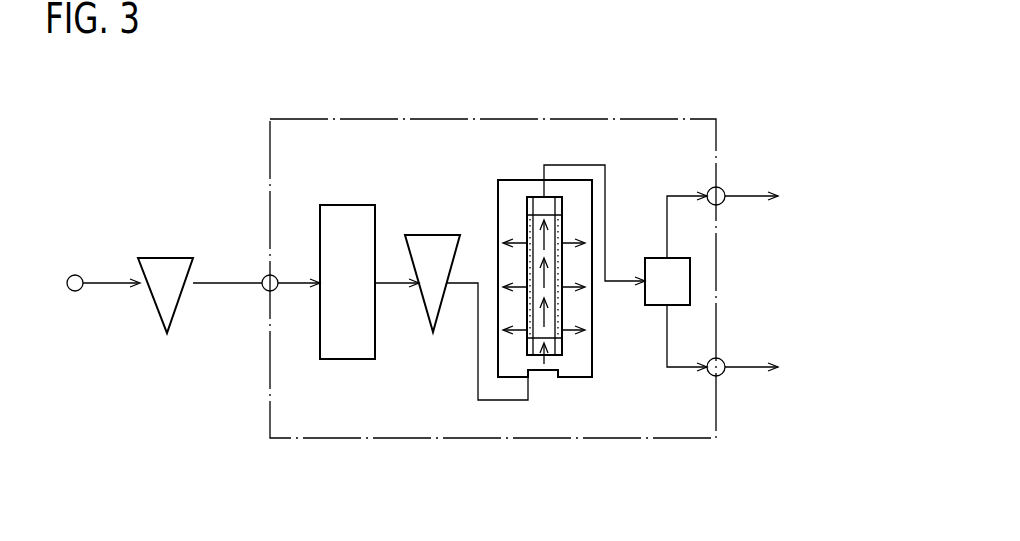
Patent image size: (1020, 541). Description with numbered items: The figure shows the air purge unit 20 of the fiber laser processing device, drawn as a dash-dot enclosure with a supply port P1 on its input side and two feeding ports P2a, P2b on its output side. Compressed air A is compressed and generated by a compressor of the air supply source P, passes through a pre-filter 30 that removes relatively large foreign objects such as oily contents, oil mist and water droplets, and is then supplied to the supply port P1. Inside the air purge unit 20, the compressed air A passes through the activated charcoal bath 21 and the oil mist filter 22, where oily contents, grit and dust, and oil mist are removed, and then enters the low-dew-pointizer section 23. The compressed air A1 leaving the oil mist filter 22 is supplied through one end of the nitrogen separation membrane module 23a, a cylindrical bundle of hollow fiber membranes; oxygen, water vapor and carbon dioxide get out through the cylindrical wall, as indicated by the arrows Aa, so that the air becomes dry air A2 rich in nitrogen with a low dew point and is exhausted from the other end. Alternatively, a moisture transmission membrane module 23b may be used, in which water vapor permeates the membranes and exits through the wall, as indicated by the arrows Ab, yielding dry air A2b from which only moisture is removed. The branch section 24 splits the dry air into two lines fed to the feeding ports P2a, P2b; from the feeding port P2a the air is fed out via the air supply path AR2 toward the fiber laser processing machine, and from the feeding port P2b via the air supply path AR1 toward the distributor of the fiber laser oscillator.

The air purge unit 20 is at (392, 119).
The activated charcoal bath 21 is at (341, 360).
The oil mist filter 22 is at (427, 308).
The low-dew-pointizer section 23 is at (596, 369).
The nitrogen separation membrane module 23a is at (524, 220).
The moisture transmission membrane module 23b is at (472, 248).
The branch section 24 is at (655, 306).
The pre-filter 30 is at (163, 258).
The air supply source P is at (64, 278).
The supply port P1 is at (263, 291).
The feeding port P2a is at (722, 190).
The feeding port P2b is at (722, 361).
The compressed air A is at (218, 283).
The compressed air A1 is at (548, 364).
The dry air A2 is at (580, 165).
The dry air A2b is at (591, 180).
The arrows Aa is at (520, 239).
The arrows Ab is at (479, 257).
The air supply path AR2 is at (745, 200).
The air supply path AR1 is at (745, 371).